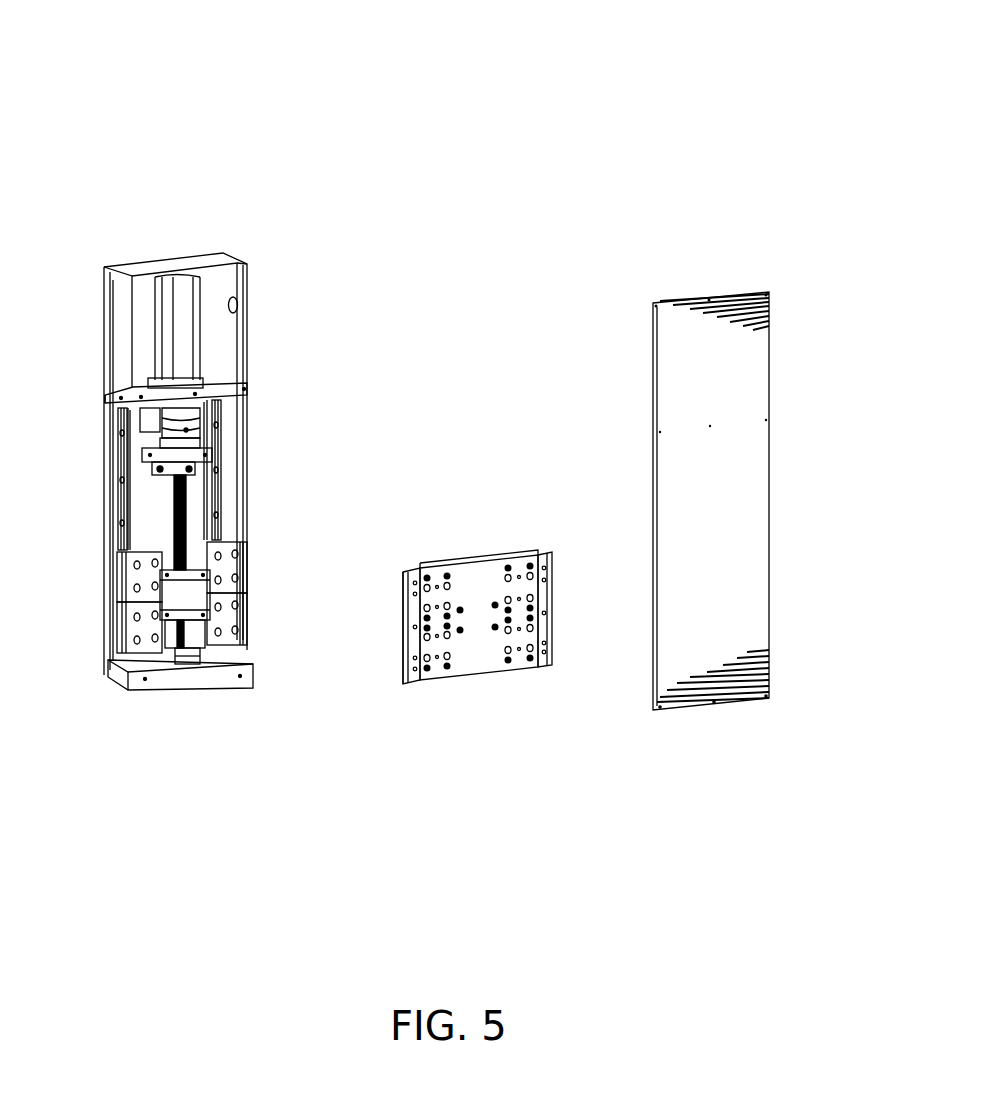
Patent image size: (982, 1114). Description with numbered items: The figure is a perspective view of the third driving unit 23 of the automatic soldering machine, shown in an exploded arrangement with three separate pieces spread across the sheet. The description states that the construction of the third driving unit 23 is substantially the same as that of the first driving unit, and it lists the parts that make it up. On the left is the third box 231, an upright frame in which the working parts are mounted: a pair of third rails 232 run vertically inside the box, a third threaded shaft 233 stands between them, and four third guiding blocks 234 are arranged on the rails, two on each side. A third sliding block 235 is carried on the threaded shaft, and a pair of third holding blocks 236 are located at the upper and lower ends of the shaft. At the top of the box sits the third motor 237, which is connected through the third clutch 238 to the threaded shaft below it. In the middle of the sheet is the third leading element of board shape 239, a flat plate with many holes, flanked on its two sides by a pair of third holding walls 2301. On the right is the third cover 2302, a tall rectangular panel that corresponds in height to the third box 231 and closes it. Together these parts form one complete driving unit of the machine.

The third driving unit 23 is at (90, 50).
The third box 231 is at (120, 262).
The third rails 232 is at (150, 455).
The third threaded shaft 233 is at (210, 462).
The third guiding blocks 234 is at (240, 568).
The third sliding block 235 is at (152, 525).
The third holding blocks 236 is at (205, 420).
The third motor 237 is at (185, 335).
The third clutch 238 is at (155, 400).
The third leading element of board shape 239 is at (482, 655).
The third holding walls 2301 is at (418, 568).
The third cover 2302 is at (740, 550).